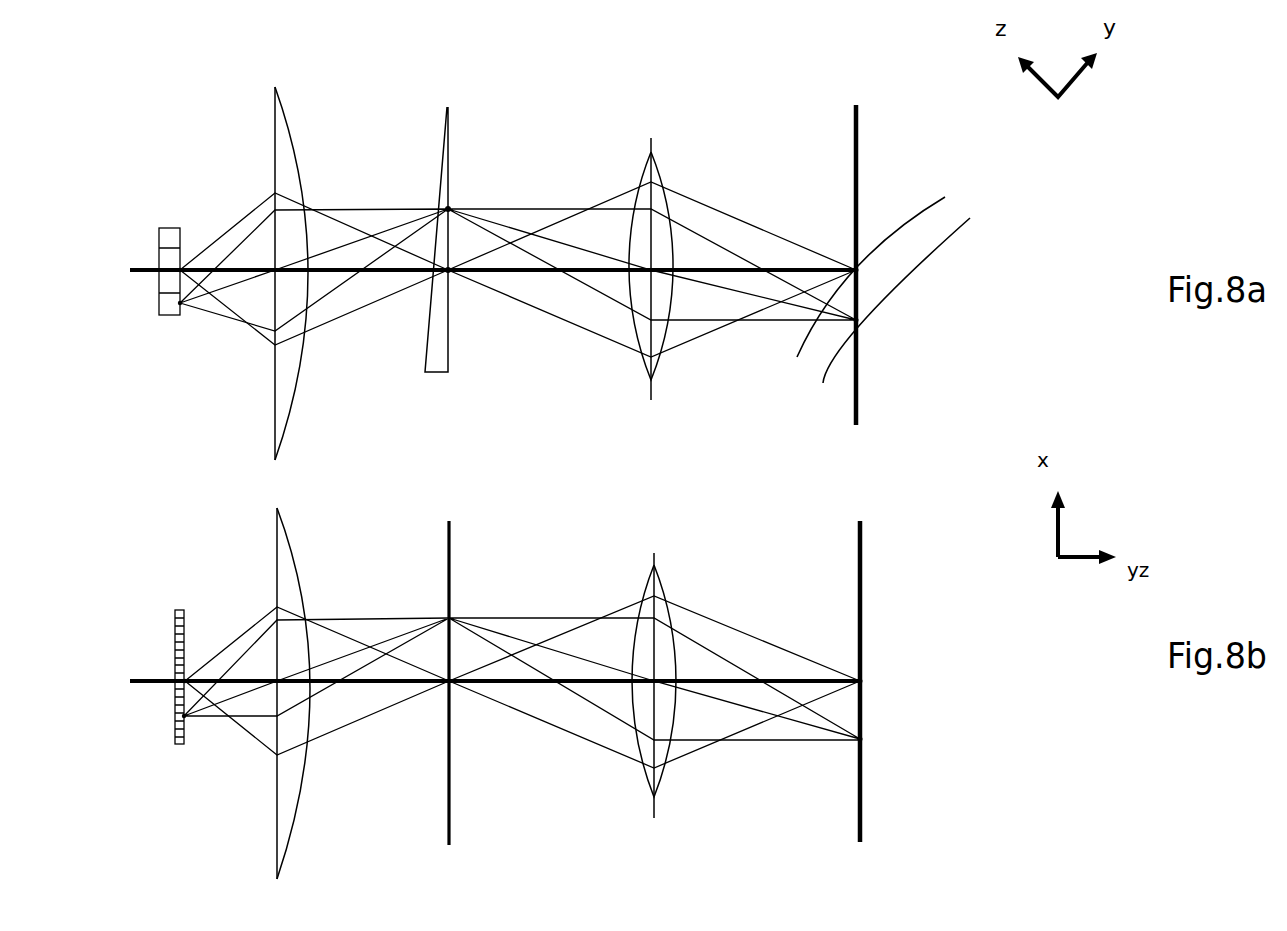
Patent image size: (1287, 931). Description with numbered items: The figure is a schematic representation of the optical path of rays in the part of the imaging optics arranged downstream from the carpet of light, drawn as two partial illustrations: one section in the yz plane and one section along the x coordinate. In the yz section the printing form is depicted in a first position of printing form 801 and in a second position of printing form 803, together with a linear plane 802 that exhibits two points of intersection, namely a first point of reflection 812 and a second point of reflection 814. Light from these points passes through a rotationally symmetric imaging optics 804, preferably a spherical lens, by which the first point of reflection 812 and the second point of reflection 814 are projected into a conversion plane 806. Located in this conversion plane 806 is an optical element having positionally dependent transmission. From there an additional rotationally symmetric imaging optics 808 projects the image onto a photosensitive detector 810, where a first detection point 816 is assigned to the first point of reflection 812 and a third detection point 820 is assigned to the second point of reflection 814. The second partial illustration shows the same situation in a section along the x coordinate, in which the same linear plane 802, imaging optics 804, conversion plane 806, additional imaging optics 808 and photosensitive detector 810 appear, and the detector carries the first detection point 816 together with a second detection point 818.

In FIG. 8A, the printing form (first position) 801 is at (907, 226).
In FIG. 8A, the linear plane 802 is at (862, 388).
In FIG. 8B, the linear plane 802 is at (863, 543).
In FIG. 8A, the printing form (second position) 803 is at (935, 250).
In FIG. 8A, the rotationally symmetric imaging optics 804 is at (662, 357).
In FIG. 8B, the rotationally symmetric imaging optics 804 is at (665, 587).
In FIG. 8A, the conversion plane 806 is at (453, 315).
In FIG. 8B, the conversion plane 806 is at (450, 545).
In FIG. 8A, the additional rotationally symmetric imaging optics 808 is at (308, 357).
In FIG. 8B, the additional rotationally symmetric imaging optics 808 is at (301, 583).
In FIG. 8A, the photosensitive detector 810 is at (157, 297).
In FIG. 8B, the photosensitive detector 810 is at (169, 621).
In FIG. 8A, the first point of reflection 812 is at (856, 262).
In FIG. 8B, the first point of reflection 812 is at (862, 682).
In FIG. 8A, the second point of reflection 814 is at (858, 322).
In FIG. 8B, the second point of reflection 814 is at (862, 739).
In FIG. 8A, the first detection point 816 is at (182, 267).
In FIG. 8B, the first detection point 816 is at (186, 679).
In FIG. 8B, the second detection point 818 is at (186, 720).
In FIG. 8A, the third detection point 820 is at (192, 308).